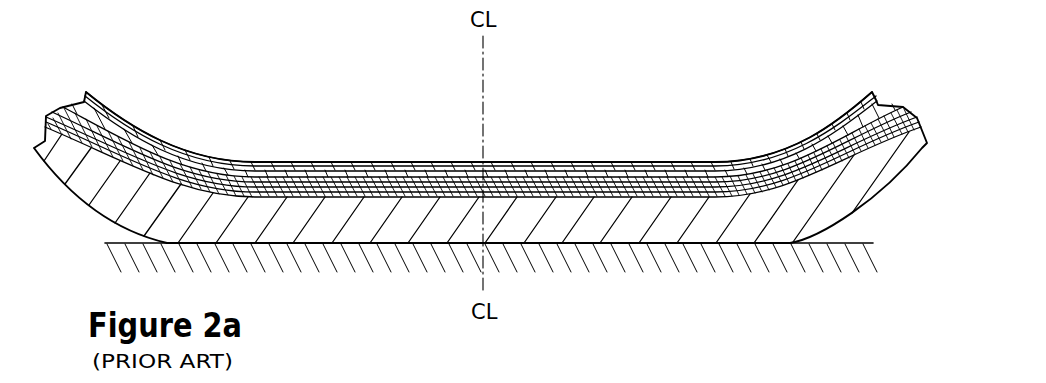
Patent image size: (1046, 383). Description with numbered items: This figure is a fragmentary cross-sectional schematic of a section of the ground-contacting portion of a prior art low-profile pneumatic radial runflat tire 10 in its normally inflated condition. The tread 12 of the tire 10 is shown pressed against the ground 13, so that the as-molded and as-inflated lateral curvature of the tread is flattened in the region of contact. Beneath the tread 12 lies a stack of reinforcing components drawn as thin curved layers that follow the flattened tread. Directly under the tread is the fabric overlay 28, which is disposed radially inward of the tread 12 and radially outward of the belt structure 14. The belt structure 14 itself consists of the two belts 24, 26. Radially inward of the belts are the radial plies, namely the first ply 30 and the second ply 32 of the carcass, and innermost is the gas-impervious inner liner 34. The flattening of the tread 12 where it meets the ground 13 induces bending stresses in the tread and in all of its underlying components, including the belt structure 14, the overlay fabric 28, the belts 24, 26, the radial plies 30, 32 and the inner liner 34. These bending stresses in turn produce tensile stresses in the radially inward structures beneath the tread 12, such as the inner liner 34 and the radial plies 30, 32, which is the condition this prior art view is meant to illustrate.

The runflat tire 10 is at (888, 209).
The tread 12 is at (293, 233).
The ground 13 is at (442, 252).
The belt structure 14 is at (601, 255).
The belt 24 is at (366, 191).
The belt 26 is at (403, 183).
The fabric overlay 28 is at (600, 243).
The first ply 30 is at (648, 172).
The second ply 32 is at (665, 178).
The inner liner 34 is at (620, 162).